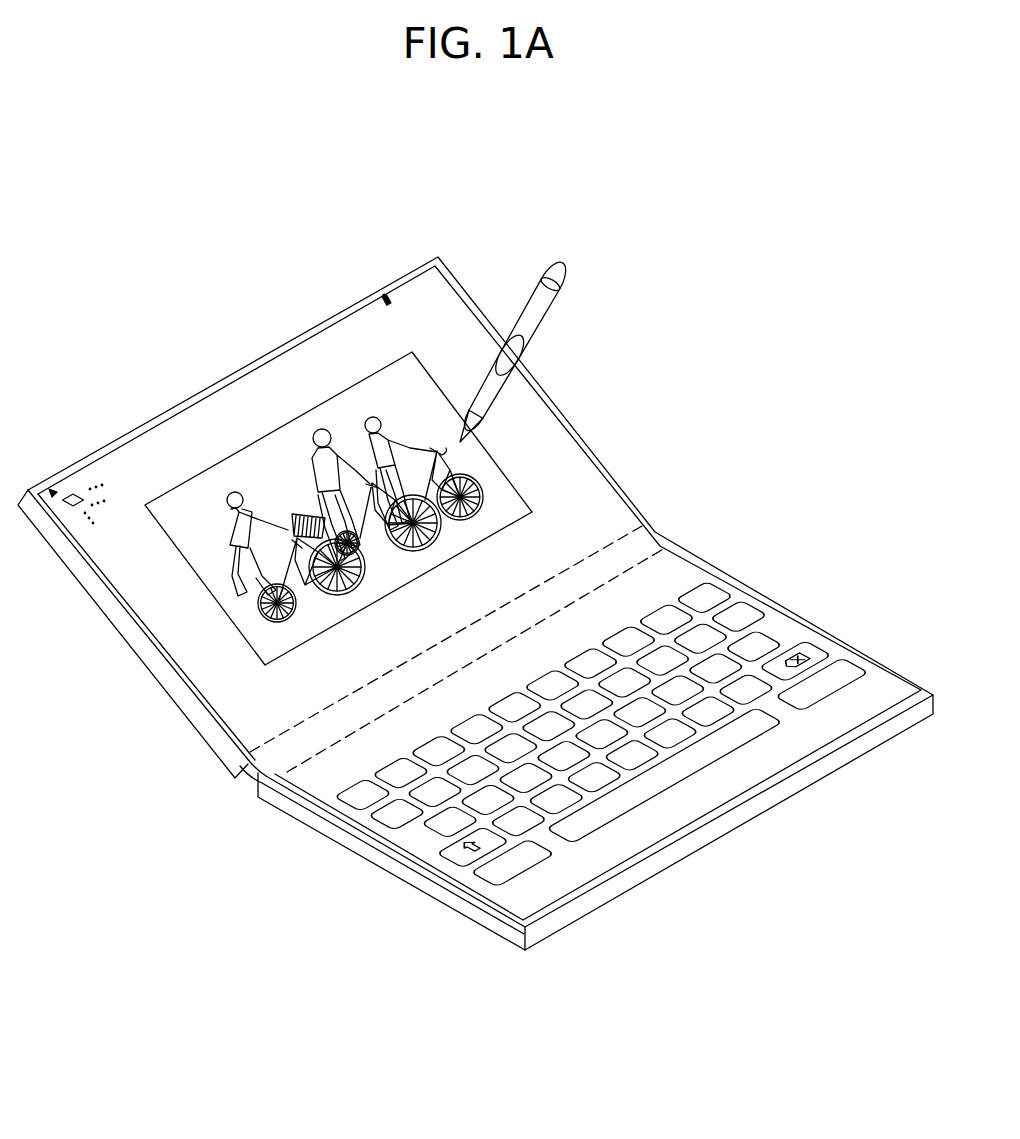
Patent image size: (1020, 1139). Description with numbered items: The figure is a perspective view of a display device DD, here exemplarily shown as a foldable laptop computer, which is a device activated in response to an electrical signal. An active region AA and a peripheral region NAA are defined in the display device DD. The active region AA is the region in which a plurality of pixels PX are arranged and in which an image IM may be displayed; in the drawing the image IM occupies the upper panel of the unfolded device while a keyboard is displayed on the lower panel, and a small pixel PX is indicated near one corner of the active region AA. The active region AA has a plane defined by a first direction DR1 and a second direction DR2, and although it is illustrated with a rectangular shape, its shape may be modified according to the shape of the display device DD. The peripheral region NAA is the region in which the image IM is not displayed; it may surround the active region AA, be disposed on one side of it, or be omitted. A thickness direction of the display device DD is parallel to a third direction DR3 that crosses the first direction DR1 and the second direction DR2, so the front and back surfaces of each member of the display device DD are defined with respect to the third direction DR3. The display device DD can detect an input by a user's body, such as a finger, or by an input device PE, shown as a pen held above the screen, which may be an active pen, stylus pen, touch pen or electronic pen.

The display device DD is at (475, 585).
The input device PE is at (551, 281).
The image IM is at (517, 478).
The pixel PX is at (70, 493).
The active region AA is at (807, 638).
The peripheral region NAA is at (877, 660).
The first direction DR1 is at (87, 908).
The second direction DR2 is at (87, 908).
The third direction DR3 is at (87, 908).